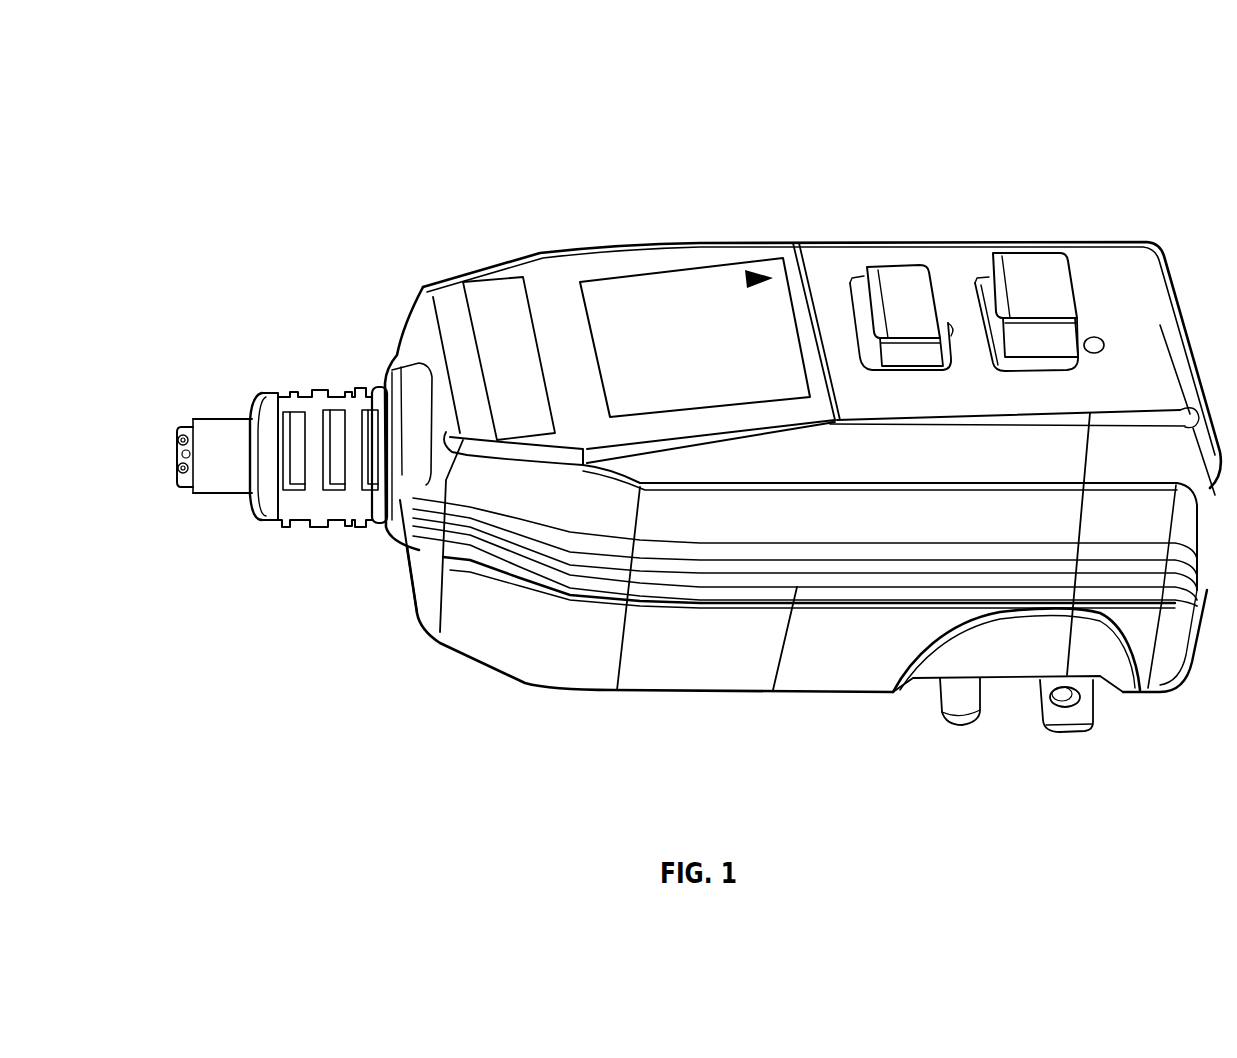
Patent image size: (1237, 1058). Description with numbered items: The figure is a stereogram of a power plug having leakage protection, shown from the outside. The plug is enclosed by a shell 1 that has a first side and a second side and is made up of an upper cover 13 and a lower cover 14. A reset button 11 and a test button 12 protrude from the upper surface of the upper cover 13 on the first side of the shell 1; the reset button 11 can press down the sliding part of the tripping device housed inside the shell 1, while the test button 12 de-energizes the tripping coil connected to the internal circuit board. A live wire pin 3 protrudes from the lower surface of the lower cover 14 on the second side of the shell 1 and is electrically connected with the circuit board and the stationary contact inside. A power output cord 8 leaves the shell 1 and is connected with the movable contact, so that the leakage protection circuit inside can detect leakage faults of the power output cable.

The shell 1 is at (745, 223).
The live wire pin 3 is at (1060, 728).
The power output cord 8 is at (220, 467).
The reset button 11 is at (1029, 276).
The test button 12 is at (898, 287).
The upper cover 13 is at (570, 323).
The lower cover 14 is at (727, 668).